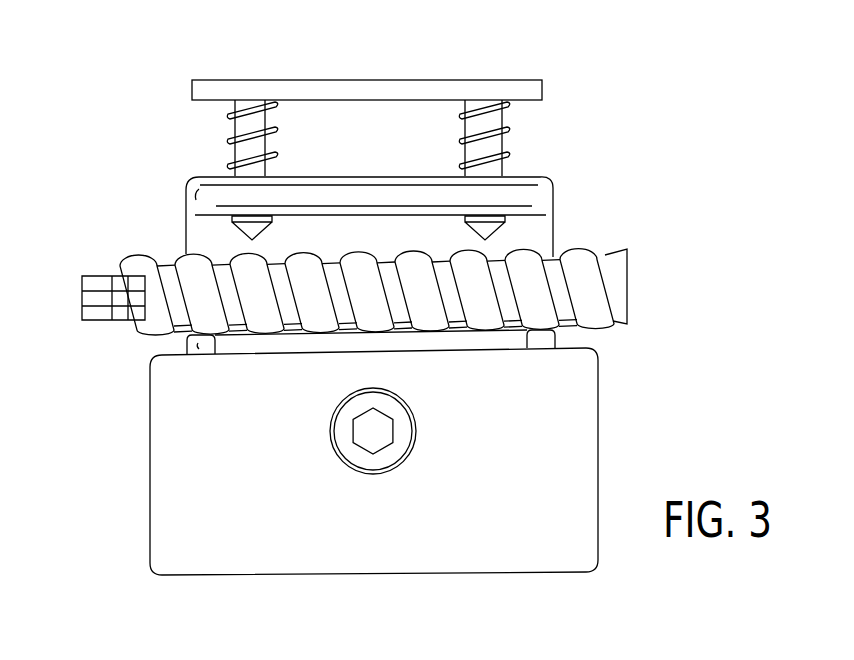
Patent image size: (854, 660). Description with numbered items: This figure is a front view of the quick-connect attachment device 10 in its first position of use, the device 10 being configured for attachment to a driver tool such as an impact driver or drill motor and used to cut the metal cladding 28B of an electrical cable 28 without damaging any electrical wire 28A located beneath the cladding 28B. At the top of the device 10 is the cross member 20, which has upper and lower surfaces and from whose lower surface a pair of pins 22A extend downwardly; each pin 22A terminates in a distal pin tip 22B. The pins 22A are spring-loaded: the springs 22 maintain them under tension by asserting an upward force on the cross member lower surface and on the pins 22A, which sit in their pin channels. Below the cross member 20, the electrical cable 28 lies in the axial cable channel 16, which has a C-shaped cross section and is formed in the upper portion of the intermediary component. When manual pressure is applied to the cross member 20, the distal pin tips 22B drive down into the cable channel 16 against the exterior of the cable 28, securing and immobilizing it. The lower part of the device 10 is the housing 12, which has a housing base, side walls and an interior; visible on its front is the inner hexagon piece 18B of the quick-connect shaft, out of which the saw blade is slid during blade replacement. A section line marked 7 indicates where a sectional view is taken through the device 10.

The section line 7- 7 is at (367, 66).
The quick-connect attachment device 10 is at (615, 78).
The housing 12 is at (178, 544).
The axial cable channel 16 is at (526, 241).
The inner hexagon piece 18B is at (376, 441).
The cross member 20 is at (300, 80).
The springs 22 is at (230, 137).
The pair of pins 22A is at (467, 121).
The distal pin tip 22B is at (45, 233).
The electrical cable 28 is at (427, 293).
The electrical wire 28A is at (92, 322).
The metal cladding 28B is at (613, 278).